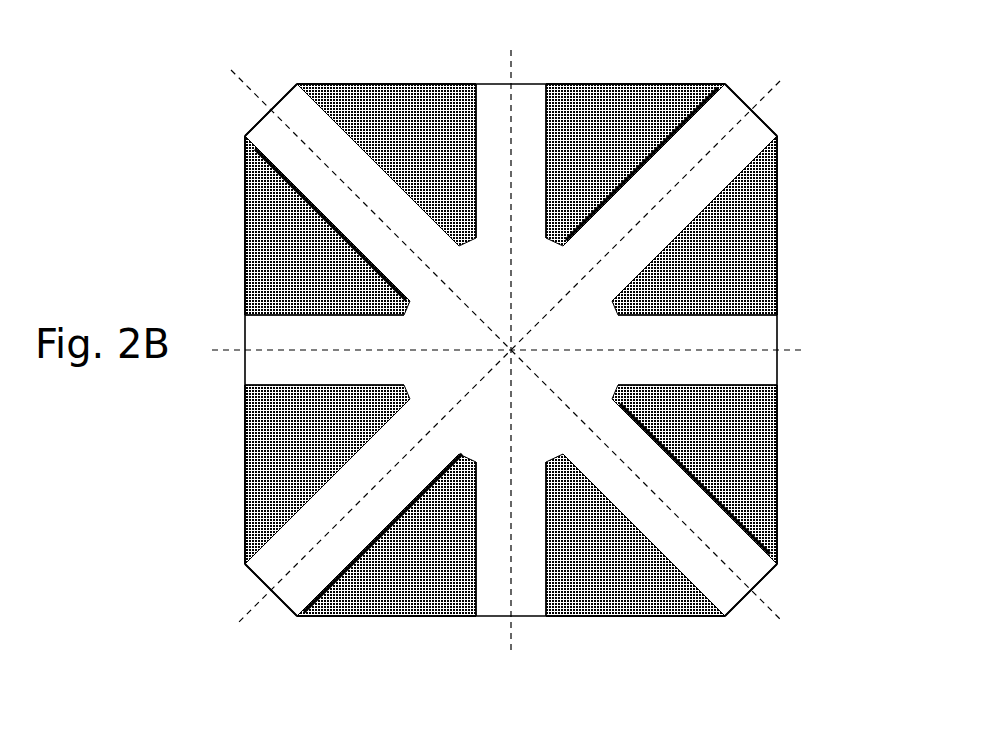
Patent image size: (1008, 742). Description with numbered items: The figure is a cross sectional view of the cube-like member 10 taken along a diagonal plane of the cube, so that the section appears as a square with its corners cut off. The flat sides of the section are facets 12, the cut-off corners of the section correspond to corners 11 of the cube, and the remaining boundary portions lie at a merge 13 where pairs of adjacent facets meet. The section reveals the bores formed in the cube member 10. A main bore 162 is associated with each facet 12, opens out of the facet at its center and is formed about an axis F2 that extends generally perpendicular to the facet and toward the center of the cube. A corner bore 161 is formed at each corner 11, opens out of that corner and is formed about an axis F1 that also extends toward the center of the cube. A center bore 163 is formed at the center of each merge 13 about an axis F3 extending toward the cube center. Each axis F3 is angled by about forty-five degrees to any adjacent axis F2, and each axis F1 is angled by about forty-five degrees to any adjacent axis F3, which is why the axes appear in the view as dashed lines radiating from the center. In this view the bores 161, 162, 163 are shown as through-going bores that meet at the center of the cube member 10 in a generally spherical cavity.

The cube-like member 10 is at (822, 65).
The corner 11 is at (277, 90).
The facet 12 is at (598, 78).
The merge 13 is at (208, 227).
The corner bore 161 is at (277, 153).
The main bore 162 is at (477, 117).
The center bore 163 is at (283, 387).
The axis F1 is at (508, 344).
The axis F2 is at (515, 354).
The axis F3 is at (507, 349).